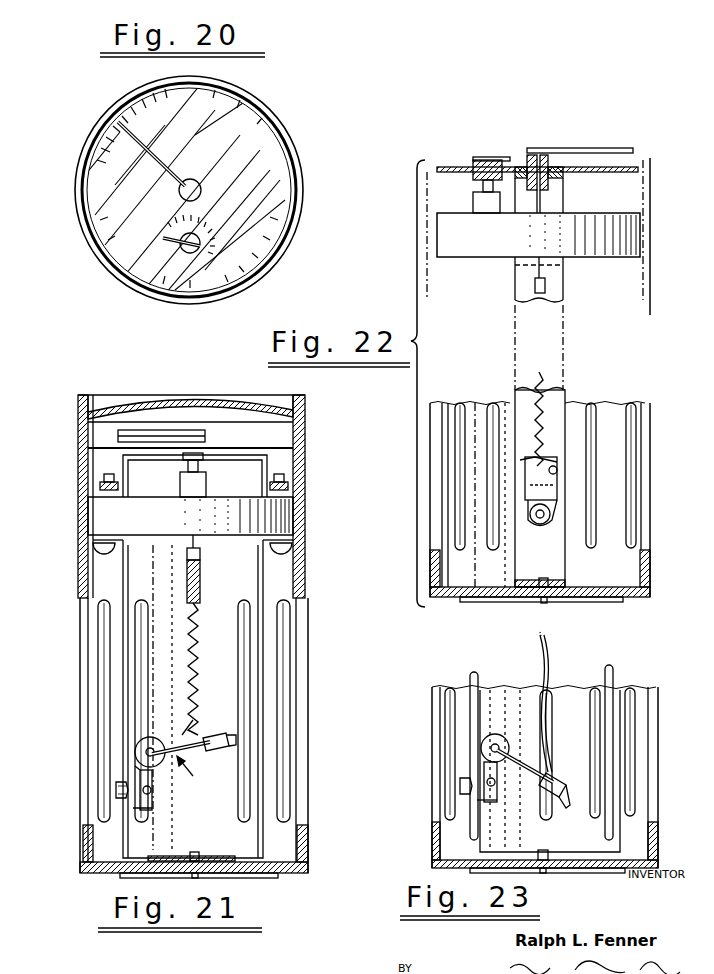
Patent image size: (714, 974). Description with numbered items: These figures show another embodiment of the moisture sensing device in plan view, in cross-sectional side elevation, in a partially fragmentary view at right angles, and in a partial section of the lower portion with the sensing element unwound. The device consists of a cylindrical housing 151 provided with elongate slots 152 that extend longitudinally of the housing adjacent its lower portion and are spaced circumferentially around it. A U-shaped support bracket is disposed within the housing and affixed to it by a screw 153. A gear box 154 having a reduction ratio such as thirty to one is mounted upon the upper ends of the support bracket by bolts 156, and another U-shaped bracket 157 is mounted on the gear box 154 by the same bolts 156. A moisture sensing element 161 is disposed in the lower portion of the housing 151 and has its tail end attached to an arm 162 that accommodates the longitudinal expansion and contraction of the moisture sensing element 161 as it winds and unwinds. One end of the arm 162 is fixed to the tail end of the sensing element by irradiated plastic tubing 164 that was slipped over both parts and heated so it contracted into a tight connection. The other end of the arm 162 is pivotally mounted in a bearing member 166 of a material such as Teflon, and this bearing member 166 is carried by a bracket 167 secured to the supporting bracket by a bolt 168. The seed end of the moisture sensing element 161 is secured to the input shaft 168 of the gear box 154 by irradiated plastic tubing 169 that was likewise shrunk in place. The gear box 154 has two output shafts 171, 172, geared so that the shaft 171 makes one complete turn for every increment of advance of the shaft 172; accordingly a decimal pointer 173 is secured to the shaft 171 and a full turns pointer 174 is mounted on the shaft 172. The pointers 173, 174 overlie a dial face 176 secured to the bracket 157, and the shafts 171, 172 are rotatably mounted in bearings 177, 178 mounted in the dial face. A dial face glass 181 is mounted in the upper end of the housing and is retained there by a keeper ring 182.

In FIG. 21, the cylindrical housing 151 is at (300, 552).
In FIG. 22, the elongate slots 152 is at (540, 495).
In FIG. 21, the elongate slots 152 is at (300, 636).
In FIG. 23, the elongate slots 152 is at (598, 820).
In FIG. 22, the screw 153 is at (548, 600).
In FIG. 21, the screw 153 is at (190, 860).
In FIG. 23, the screw 153 is at (543, 861).
In FIG. 21, the gear box 154 is at (95, 522).
In FIG. 21, the bolts 156 is at (284, 550).
In FIG. 21, the U-shaped bracket 157 is at (262, 476).
In FIG. 22, the moisture sensing element 161 is at (548, 405).
In FIG. 21, the moisture sensing element 161 is at (196, 672).
In FIG. 23, the moisture sensing element 161 is at (546, 702).
In FIG. 21, the arm 162 is at (188, 793).
In FIG. 21, the irradiated plastic tubing 164 is at (222, 737).
In FIG. 23, the irradiated plastic tubing 164 is at (555, 777).
In FIG. 21, the bearing member 166 is at (160, 738).
In FIG. 23, the bearing member 166 is at (495, 748).
In FIG. 22, the bracket 167 is at (526, 510).
In FIG. 21, the bracket 167 is at (152, 778).
In FIG. 23, the bracket 167 is at (497, 775).
In FIG. 21, the input shaft 168 is at (202, 554).
In FIG. 21, the irradiated plastic tubing 169 is at (202, 576).
In FIG. 22, the output shaft 171 is at (543, 205).
In FIG. 22, the output shaft 172 is at (480, 188).
In FIG. 20, the decimal pointer 173 is at (165, 167).
In FIG. 20, the full turns pointer 174 is at (160, 250).
In FIG. 22, the dial face 176 is at (452, 167).
In FIG. 21, the dial face 176 is at (296, 448).
In FIG. 22, the bearing 177 is at (545, 152).
In FIG. 22, the bearing 178 is at (478, 157).
In FIG. 21, the dial face glass 181 is at (183, 400).
In FIG. 20, the keeper ring 182 is at (189, 190).
In FIG. 21, the keeper ring 182 is at (298, 411).